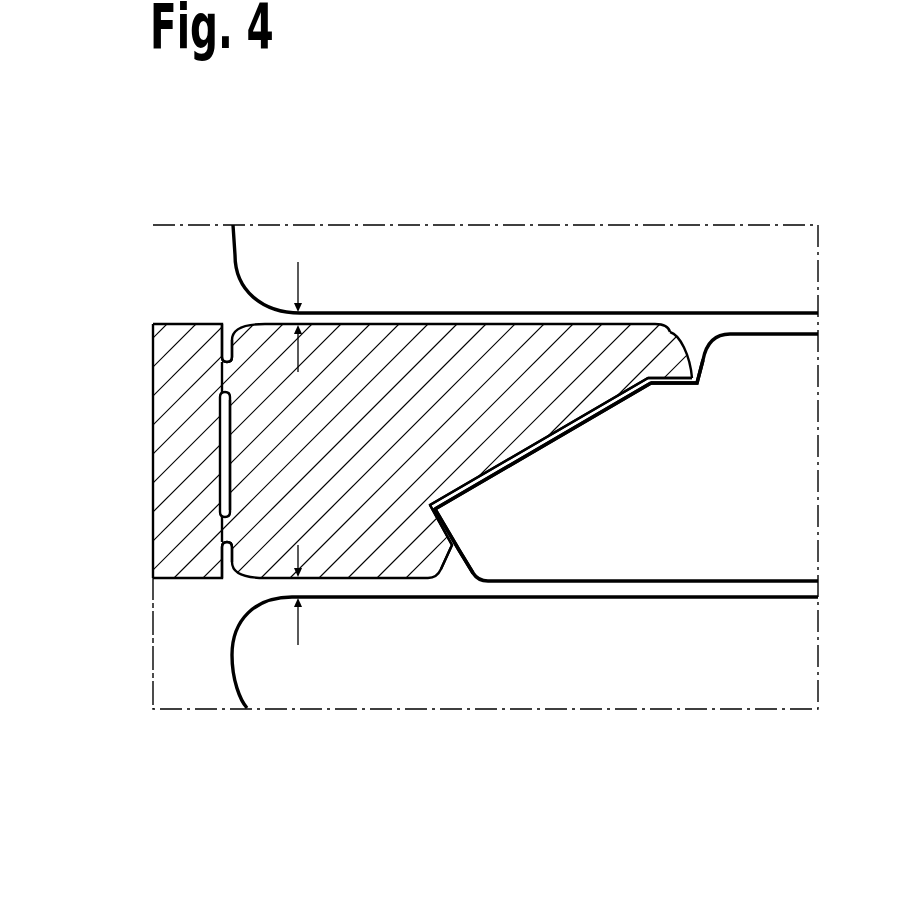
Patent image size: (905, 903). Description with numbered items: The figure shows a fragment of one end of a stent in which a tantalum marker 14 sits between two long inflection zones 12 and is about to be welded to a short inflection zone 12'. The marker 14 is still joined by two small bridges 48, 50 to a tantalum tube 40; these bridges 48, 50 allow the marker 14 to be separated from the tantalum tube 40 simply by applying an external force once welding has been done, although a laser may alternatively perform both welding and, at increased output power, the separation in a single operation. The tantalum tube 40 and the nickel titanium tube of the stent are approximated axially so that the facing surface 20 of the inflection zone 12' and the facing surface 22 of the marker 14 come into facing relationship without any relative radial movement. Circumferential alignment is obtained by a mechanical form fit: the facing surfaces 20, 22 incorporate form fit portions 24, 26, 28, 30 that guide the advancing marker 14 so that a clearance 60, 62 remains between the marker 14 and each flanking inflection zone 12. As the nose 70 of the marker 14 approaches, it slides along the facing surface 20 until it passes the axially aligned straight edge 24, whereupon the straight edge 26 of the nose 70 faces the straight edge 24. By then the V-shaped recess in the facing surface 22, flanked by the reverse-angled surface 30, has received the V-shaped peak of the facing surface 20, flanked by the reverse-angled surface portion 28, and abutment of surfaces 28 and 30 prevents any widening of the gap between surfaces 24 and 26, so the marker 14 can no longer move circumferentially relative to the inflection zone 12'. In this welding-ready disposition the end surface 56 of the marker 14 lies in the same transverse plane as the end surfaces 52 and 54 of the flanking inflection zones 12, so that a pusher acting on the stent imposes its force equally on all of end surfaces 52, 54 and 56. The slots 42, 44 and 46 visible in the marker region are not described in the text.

The long inflection zone 12 is at (555, 468).
The short inflection zone 12' is at (626, 556).
The tantalum marker 14 is at (402, 398).
The facing surface of the inflection zone 20 is at (573, 439).
The facing surface of the marker 22 is at (538, 432).
The straight edge 24 is at (680, 393).
The straight edge of the nose 26 is at (662, 366).
The reverse-angled surface portion 28 is at (463, 531).
The reverse-angled surface 30 is at (434, 538).
The tantalum tube 40 is at (182, 430).
The upper slot 42 is at (223, 333).
The middle slot 44 is at (225, 487).
The lower slot 46 is at (222, 556).
The bridge 48 is at (223, 382).
The bridge 50 is at (225, 532).
The end surface 52 is at (232, 258).
The end surface 54 is at (227, 655).
The end surface of the marker 56 is at (241, 430).
The clearance 60 is at (303, 322).
The clearance 62 is at (299, 590).
The nose 70 is at (688, 353).